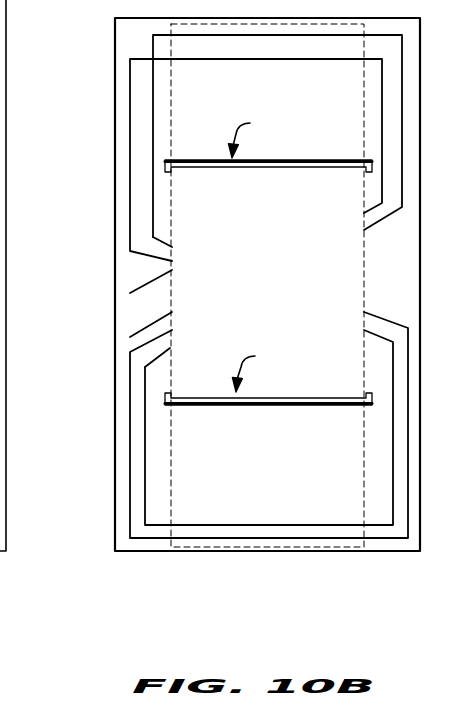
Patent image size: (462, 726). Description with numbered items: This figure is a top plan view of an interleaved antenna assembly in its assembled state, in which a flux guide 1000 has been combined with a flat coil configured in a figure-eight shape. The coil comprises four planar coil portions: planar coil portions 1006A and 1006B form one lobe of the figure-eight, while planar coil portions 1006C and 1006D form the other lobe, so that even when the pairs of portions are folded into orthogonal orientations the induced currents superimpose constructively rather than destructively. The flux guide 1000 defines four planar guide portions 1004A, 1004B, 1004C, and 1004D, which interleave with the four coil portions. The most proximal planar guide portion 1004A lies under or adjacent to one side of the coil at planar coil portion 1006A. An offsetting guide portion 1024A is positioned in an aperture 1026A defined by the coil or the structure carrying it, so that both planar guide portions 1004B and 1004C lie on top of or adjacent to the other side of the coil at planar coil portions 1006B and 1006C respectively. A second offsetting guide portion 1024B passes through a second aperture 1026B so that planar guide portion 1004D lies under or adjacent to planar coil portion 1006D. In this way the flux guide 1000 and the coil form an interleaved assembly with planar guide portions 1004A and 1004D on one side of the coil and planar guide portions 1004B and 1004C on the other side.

The flux guide 1000 is at (295, 292).
The planar guide portion 1004A is at (172, 473).
The planar guide portion 1004B is at (130, 337).
The planar guide portion 1004C is at (130, 293).
The planar guide portion 1004D is at (173, 138).
The planar coil portion 1006A is at (151, 572).
The planar coil portion 1006B is at (132, 374).
The planar coil portion 1006C is at (135, 245).
The planar coil portion 1006D is at (153, 105).
The offsetting guide portion 1024A is at (210, 405).
The offsetting guide portion 1024B is at (198, 170).
The aperture 1026A is at (255, 356).
The aperture 1026B is at (250, 123).